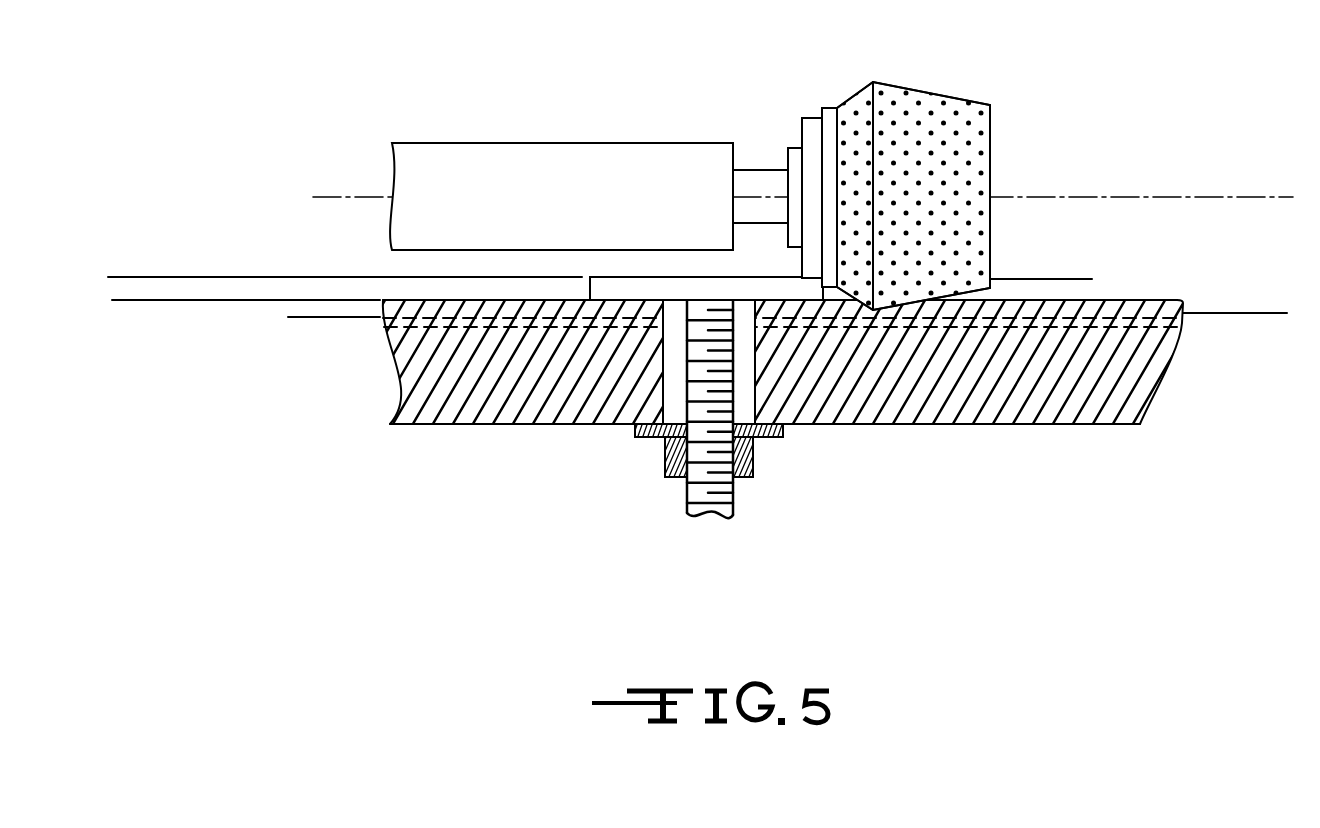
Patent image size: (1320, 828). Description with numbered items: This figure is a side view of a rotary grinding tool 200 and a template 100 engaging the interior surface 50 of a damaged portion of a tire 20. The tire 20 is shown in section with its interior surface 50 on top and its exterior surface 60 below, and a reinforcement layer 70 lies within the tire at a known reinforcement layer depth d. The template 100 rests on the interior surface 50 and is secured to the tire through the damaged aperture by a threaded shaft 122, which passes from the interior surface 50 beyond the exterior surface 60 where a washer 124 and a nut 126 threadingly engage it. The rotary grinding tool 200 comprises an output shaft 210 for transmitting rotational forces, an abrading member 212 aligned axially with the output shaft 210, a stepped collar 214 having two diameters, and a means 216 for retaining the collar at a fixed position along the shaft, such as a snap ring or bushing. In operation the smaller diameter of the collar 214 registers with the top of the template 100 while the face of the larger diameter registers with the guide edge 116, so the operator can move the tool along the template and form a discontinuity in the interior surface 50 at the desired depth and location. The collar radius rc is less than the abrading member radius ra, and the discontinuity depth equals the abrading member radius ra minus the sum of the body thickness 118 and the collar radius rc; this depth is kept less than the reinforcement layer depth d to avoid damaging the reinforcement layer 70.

The tire 20 is at (1165, 368).
The interior surface 50 is at (1131, 290).
The exterior surface 60 is at (960, 432).
The reinforcement layer 70 is at (1183, 325).
The template 100 is at (680, 264).
The guide edge 116 is at (578, 289).
The body thickness 118 is at (132, 225).
The reinforcement layer depth d is at (300, 248).
The shaft 122 is at (733, 511).
The washer 124 is at (777, 438).
The nut 126 is at (755, 462).
The rotary grinding tool 200 is at (672, 121).
The output shaft 210 is at (752, 168).
The abrading member 212 is at (928, 92).
The collar 214 is at (808, 118).
The means for retaining 216 is at (795, 148).
The collar radius rc is at (1076, 197).
The abrading member radius ra is at (1276, 313).